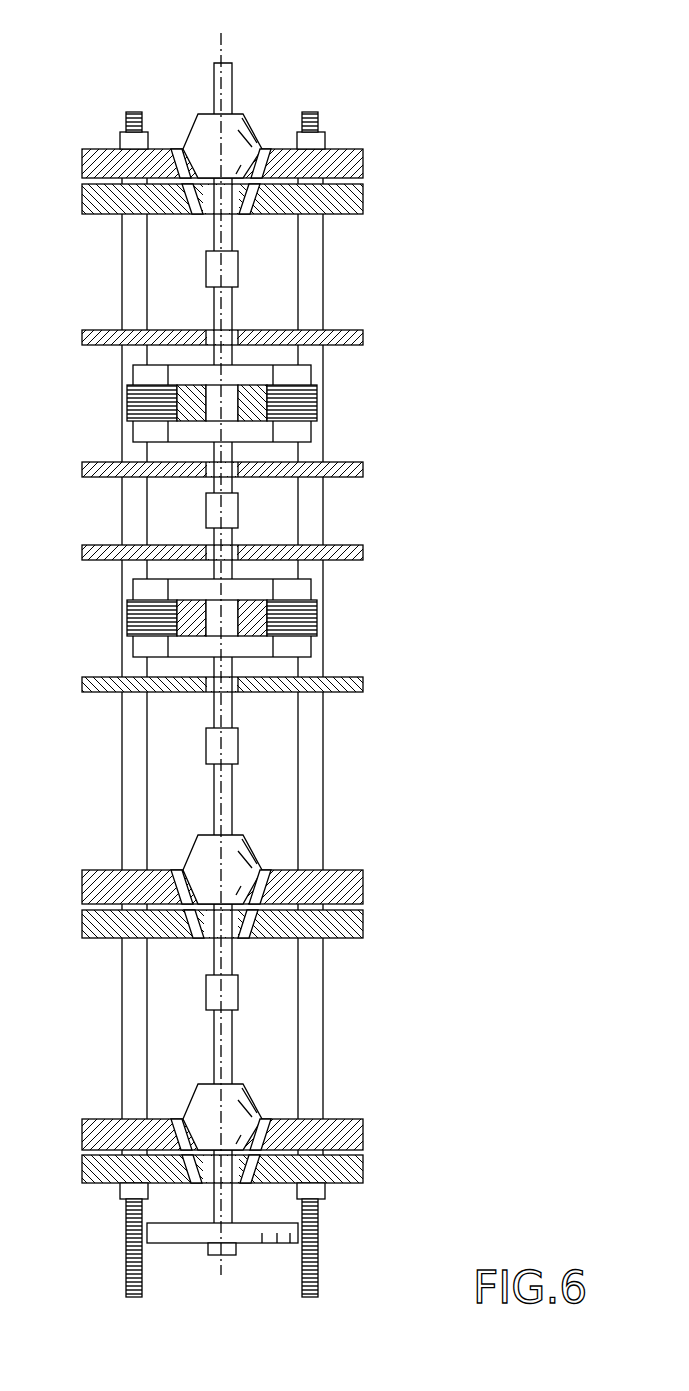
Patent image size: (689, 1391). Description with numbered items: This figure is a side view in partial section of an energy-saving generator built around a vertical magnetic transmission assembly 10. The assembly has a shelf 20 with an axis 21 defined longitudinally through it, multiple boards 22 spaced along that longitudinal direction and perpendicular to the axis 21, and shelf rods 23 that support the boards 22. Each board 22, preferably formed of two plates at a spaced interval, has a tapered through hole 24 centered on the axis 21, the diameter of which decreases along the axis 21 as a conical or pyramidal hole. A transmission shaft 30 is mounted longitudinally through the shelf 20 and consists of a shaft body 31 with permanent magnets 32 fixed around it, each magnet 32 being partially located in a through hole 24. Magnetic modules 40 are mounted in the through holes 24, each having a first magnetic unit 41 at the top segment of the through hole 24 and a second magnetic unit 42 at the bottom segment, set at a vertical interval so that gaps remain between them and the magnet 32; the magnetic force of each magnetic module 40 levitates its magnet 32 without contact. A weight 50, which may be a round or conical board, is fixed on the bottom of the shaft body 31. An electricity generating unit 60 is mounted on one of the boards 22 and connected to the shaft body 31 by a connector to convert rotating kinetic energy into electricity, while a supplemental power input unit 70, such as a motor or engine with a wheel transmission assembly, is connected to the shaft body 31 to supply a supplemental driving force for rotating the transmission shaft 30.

The vertical magnetic transmission assembly 10 is at (405, 125).
The shelf 20 is at (363, 165).
The axis 21 is at (223, 43).
The board 22 is at (347, 213).
The shelf rod 23 is at (313, 278).
The through hole 24 is at (237, 213).
The transmission shaft 30 is at (243, 110).
The shaft body 31 is at (217, 243).
The magnet 32 is at (240, 128).
The magnetic module 40 is at (278, 138).
The first magnetic unit 41 is at (170, 140).
The second magnetic unit 42 is at (198, 212).
The weight 50 is at (248, 1245).
The electricity generating unit 60 is at (315, 375).
The supplemental power input unit 70 is at (315, 588).